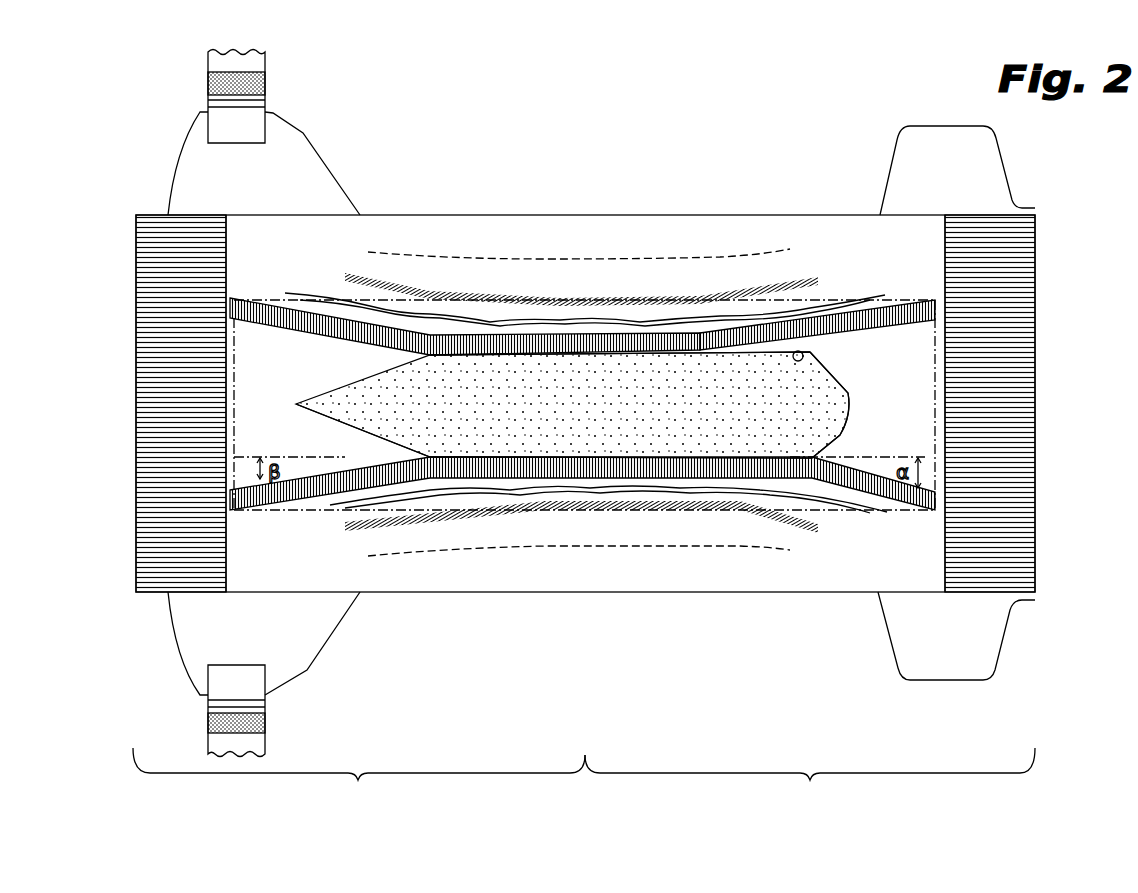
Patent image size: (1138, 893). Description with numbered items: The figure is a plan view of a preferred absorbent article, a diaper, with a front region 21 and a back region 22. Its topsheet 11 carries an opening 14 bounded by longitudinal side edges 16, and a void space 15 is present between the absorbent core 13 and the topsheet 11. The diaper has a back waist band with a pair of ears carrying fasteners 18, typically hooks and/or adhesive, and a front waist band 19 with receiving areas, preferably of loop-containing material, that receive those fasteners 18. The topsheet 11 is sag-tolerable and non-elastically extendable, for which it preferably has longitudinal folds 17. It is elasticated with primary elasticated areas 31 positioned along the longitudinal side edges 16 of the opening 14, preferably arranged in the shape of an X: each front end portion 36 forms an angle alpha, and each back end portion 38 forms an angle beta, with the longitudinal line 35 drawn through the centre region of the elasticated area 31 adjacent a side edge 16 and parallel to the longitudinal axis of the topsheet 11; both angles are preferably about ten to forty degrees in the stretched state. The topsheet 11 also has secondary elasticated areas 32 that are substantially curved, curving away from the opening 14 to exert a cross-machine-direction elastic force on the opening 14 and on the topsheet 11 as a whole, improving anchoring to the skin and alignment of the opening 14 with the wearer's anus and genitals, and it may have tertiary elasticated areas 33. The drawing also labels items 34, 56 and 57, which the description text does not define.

The topsheet 11 is at (408, 567).
The absorbent core 13 is at (383, 390).
The opening 14 is at (360, 440).
The void space 15 is at (557, 428).
The longitudinal side edges 16 is at (593, 358).
The longitudinal folds 17 is at (638, 482).
The fasteners 18 is at (220, 62).
The front waist band 19 is at (910, 161).
The front region 21 is at (810, 783).
The back region 22 is at (359, 783).
The primary elasticated areas 31 is at (553, 354).
The secondary elasticated areas 32 is at (747, 292).
The tertiary elasticated areas 33 is at (637, 262).
The rear elastic band 34 is at (748, 480).
The longitudinal line 35 is at (258, 457).
The front end portion 36 is at (905, 332).
The back end portion 38 is at (282, 327).
The rear end of absorbent core 56 is at (832, 392).
The corner of absorbent core 57 is at (803, 349).